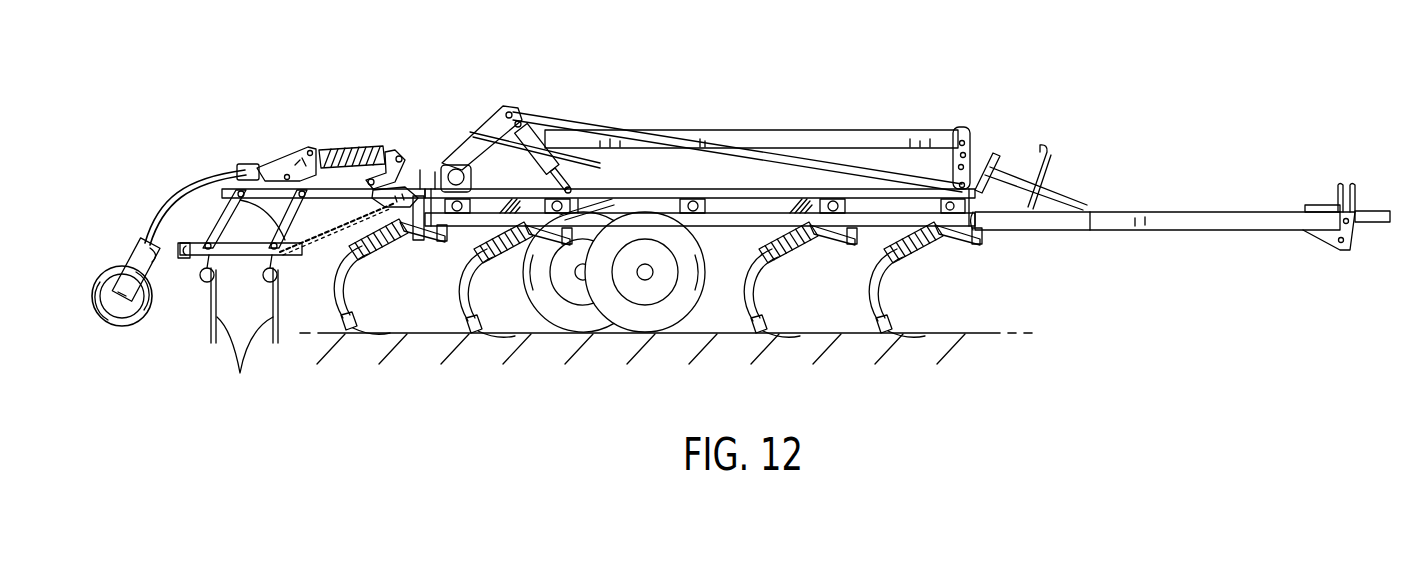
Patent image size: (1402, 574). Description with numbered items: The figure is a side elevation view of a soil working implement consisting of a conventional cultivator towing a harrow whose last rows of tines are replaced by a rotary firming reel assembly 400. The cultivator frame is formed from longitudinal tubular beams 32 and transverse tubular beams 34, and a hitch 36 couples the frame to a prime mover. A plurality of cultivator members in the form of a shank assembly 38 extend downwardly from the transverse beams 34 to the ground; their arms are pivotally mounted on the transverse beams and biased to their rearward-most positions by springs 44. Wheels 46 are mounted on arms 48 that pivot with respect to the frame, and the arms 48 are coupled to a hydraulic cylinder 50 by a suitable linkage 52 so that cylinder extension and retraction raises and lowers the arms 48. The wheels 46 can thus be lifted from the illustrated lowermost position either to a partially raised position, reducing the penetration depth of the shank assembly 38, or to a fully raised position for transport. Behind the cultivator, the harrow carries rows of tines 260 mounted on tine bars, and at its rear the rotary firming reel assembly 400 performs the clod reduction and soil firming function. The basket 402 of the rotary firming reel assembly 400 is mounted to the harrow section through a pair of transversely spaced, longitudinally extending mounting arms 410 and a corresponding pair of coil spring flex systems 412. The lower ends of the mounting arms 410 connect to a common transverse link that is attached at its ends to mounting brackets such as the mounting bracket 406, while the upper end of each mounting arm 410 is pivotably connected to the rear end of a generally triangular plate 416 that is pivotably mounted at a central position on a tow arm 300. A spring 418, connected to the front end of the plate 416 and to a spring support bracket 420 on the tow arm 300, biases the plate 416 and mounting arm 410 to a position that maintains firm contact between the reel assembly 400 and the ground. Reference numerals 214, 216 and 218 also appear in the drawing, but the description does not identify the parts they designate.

The longitudinal tubular beam 32 is at (723, 218).
The transverse tubular beam 34 is at (700, 207).
The hitch 36 is at (1198, 220).
The shank assembly 38 is at (639, 308).
The spring 44 is at (750, 285).
The wheel 46 is at (630, 305).
The arm 48 is at (588, 206).
The hydraulic cylinder 50 is at (540, 128).
The linkage 52 is at (505, 118).
The front shank 214 is at (345, 245).
The chain 216 is at (360, 215).
The link 218 is at (254, 250).
The tine 260 is at (239, 330).
The tow arm 300 is at (290, 247).
The rotary firming reel assembly 400 is at (264, 230).
The basket 402 is at (91, 268).
The mounting bracket 406 is at (130, 328).
The mounting arm 410 is at (160, 194).
The coil spring flex system 412 is at (377, 135).
The plate 416 is at (270, 168).
The spring 418 is at (318, 150).
The spring support bracket 420 is at (410, 174).